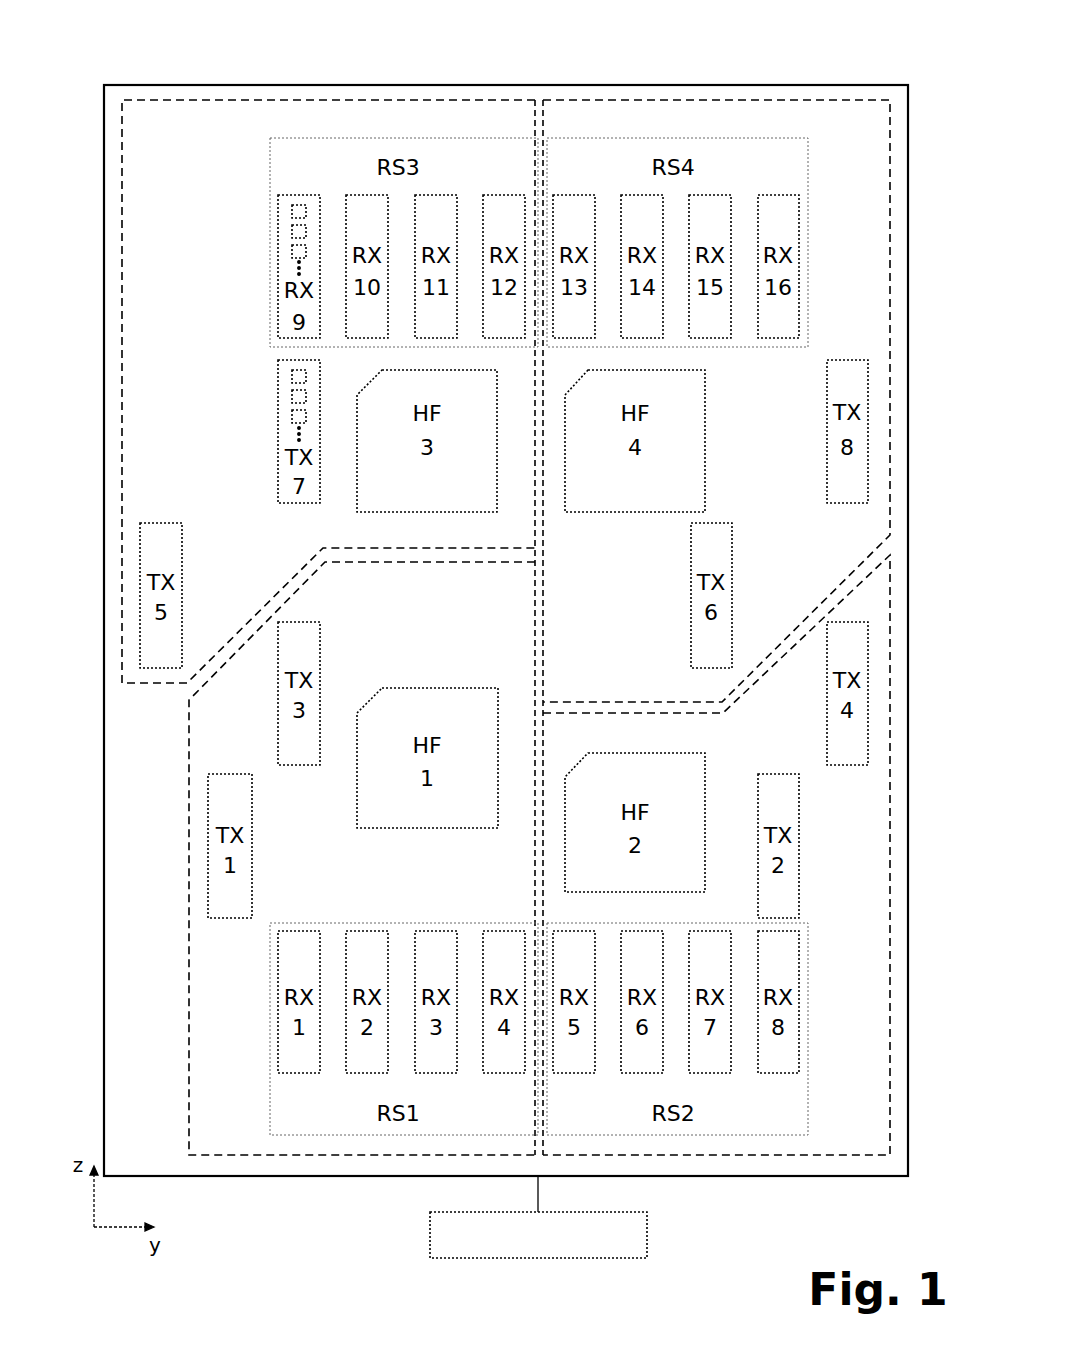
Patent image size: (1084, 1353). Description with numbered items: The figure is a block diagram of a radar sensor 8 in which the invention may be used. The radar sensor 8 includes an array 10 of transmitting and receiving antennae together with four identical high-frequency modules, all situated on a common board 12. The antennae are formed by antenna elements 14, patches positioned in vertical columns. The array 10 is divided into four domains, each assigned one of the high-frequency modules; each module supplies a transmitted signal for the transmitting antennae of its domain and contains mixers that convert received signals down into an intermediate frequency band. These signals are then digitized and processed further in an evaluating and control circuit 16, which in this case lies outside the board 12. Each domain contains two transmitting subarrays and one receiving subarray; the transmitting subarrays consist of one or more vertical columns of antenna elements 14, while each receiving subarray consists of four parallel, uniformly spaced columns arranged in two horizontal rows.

The radar sensor 8 is at (820, 50).
The array 10 is at (651, 115).
The board 12 is at (462, 85).
The antenna elements 14 is at (290, 210).
The evaluating and control circuit 16 is at (430, 1236).